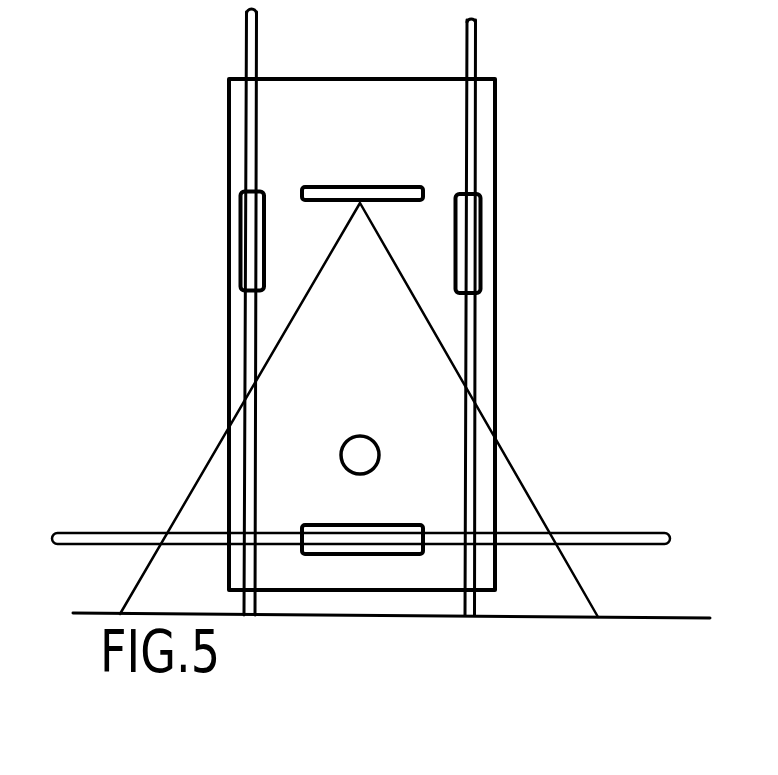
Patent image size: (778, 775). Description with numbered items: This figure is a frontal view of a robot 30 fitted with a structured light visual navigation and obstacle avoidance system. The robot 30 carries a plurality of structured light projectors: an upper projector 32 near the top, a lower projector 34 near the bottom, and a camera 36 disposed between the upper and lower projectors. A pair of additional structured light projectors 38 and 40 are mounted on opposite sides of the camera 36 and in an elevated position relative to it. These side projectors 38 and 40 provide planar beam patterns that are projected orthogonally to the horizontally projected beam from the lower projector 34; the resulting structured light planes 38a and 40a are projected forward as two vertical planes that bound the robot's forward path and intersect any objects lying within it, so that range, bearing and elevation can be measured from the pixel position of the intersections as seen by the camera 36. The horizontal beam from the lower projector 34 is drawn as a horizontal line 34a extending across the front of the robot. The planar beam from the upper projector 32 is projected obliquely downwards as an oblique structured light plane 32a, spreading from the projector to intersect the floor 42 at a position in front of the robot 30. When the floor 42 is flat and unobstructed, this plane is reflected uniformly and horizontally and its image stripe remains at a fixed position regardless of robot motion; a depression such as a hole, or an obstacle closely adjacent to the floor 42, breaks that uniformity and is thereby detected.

The robot 30 is at (496, 168).
The upper projector 32 is at (372, 186).
The oblique structured light plane 32a is at (528, 485).
The lower projector 34 is at (333, 556).
The rod 34a is at (111, 532).
The camera 36 is at (380, 462).
The structured light projector 38 is at (235, 242).
The structured light plane 38a is at (243, 325).
The structured light projector 40 is at (483, 272).
The structured light plane 40a is at (478, 367).
The floor 42 is at (98, 612).